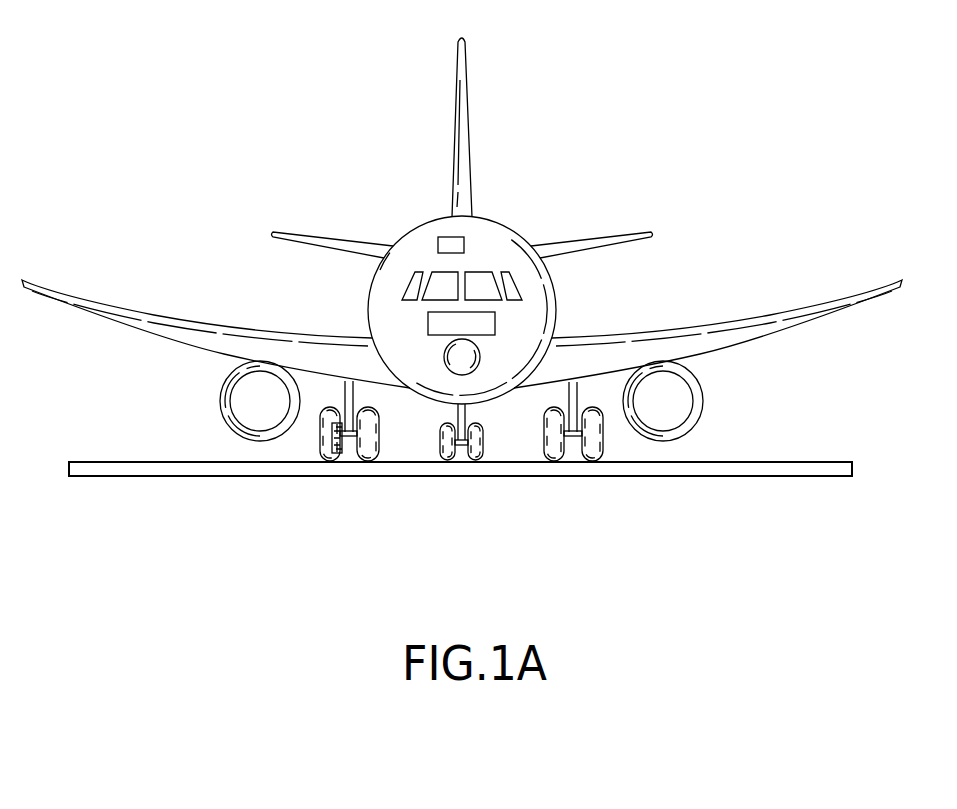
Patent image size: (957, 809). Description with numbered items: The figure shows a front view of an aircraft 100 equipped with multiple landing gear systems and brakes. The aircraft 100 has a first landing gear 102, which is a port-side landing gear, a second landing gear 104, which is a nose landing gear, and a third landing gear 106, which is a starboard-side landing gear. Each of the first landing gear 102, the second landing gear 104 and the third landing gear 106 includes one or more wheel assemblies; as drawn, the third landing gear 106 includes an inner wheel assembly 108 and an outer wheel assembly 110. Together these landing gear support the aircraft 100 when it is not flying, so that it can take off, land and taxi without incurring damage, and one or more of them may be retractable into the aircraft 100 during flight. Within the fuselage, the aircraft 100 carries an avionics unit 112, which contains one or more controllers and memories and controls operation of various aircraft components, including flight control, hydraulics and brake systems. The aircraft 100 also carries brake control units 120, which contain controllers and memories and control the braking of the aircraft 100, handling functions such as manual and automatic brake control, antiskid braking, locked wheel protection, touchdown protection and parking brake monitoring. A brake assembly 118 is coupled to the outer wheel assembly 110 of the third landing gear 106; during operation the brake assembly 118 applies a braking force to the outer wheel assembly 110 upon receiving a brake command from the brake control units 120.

The aircraft 100 is at (309, 72).
The first landing gear 102 is at (613, 455).
The second landing gear 104 is at (492, 465).
The third landing gear 106 is at (292, 452).
The inner wheel assembly 108 is at (378, 462).
The outer wheel assembly 110 is at (331, 462).
The avionics unit 112 is at (465, 244).
The brake assembly 118 is at (334, 460).
The brake control units 120 is at (497, 325).